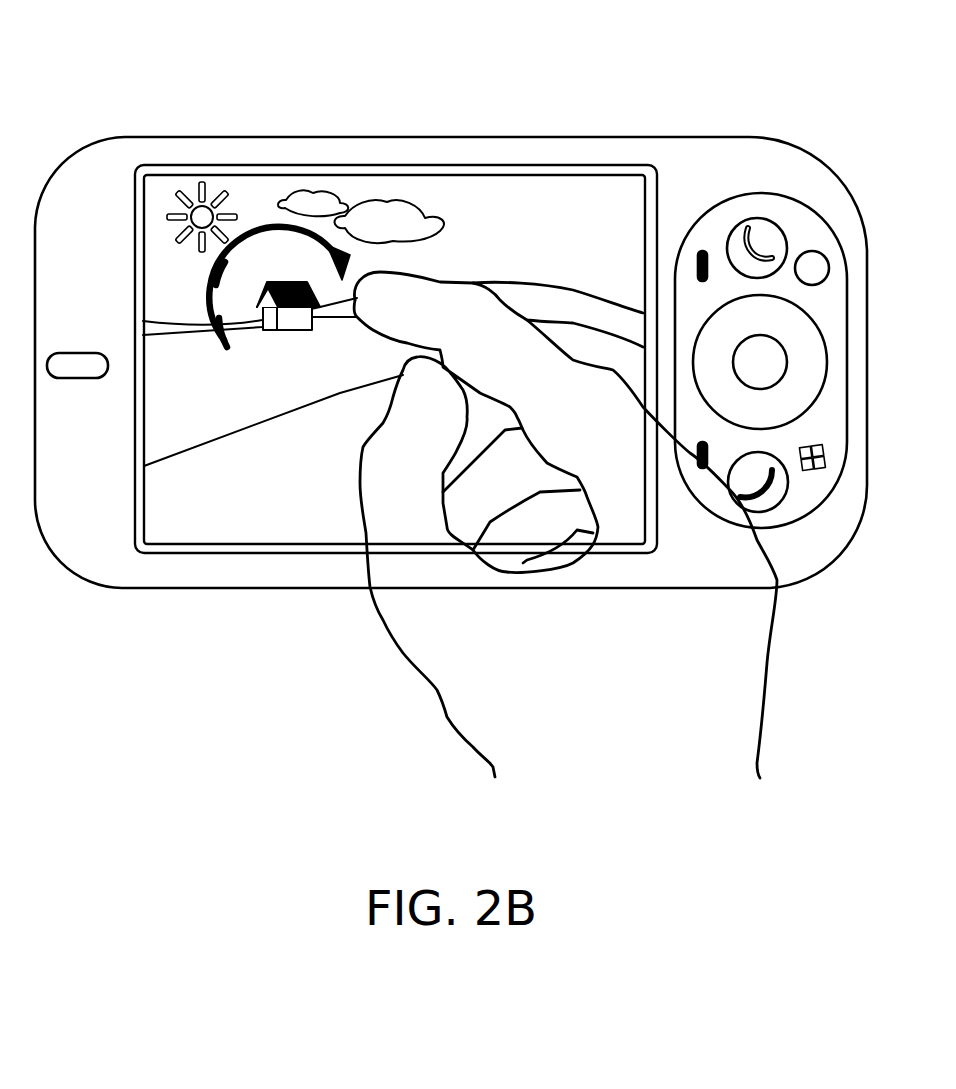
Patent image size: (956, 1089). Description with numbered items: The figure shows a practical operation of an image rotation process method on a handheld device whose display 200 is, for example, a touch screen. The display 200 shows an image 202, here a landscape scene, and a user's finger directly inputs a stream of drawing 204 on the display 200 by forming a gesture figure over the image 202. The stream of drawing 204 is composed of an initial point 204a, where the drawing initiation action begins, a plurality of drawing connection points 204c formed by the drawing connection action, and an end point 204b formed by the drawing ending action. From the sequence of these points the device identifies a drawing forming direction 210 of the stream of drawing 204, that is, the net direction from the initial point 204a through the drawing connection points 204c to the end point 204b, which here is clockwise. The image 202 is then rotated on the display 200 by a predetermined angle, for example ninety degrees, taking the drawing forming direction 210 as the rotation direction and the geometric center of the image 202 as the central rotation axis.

The display 200 is at (478, 176).
The image 202 is at (563, 195).
The stream of drawing 204 is at (253, 241).
The initial point 204a is at (229, 347).
The end point 204b is at (349, 266).
The drawing connection points 204c is at (190, 277).
The drawing forming direction 210 is at (325, 190).